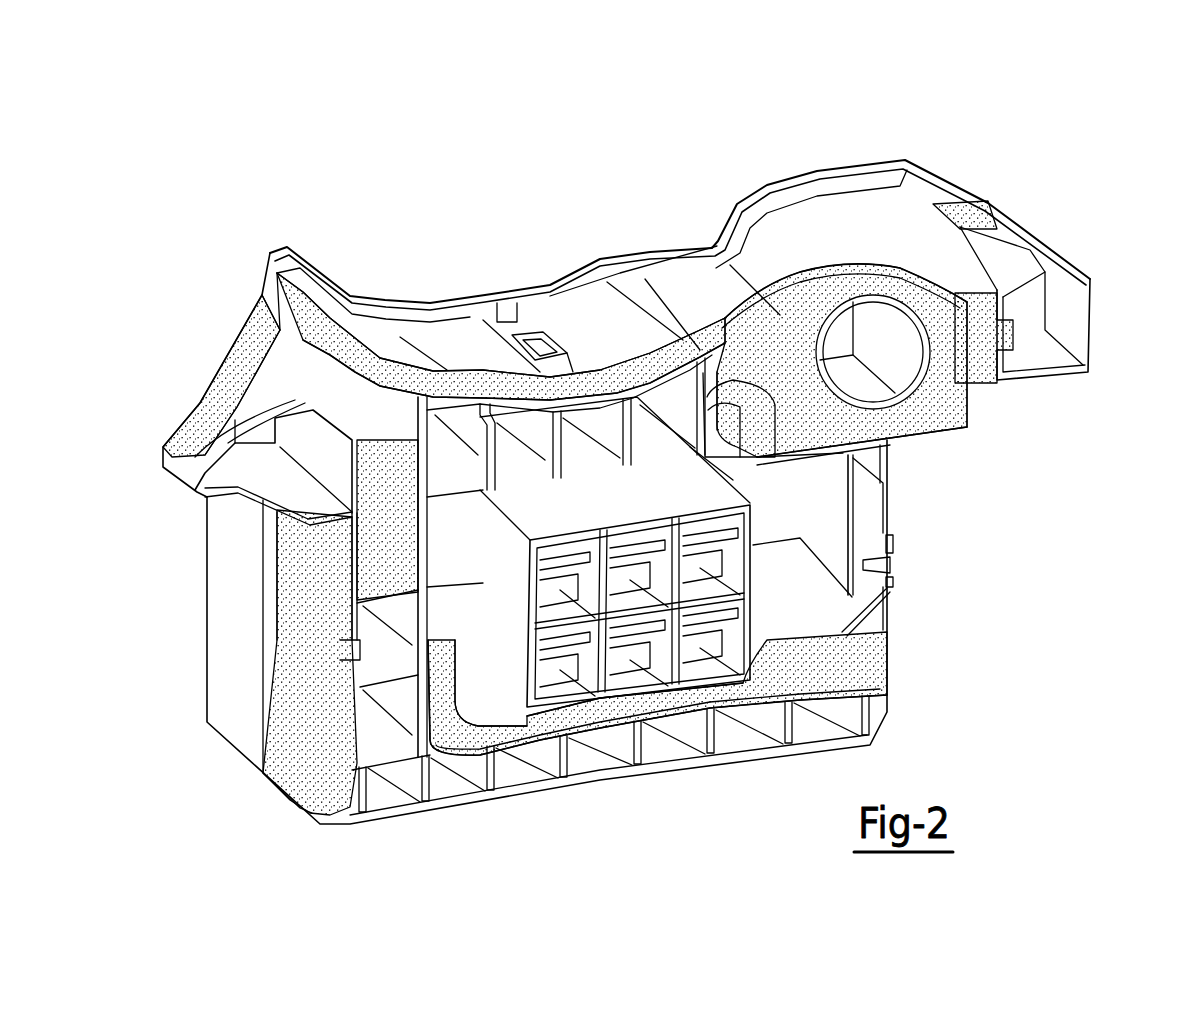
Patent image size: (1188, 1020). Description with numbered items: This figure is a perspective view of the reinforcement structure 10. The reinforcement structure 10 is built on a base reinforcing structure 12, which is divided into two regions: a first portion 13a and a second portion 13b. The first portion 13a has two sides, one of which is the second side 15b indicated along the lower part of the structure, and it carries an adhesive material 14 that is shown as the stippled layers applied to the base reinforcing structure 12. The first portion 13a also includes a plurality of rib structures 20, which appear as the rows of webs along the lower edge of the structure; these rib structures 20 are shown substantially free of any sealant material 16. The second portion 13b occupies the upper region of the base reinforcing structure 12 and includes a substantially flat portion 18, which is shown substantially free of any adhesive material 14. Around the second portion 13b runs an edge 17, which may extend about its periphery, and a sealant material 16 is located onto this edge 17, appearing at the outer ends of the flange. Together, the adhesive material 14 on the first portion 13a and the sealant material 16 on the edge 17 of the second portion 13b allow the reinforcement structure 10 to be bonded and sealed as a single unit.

The reinforcement structure 10 is at (966, 594).
The base reinforcing structure 12 is at (616, 501).
The first portion 13a is at (1132, 480).
The second portion 13b is at (581, 160).
The adhesive material 14 is at (930, 405).
The second side 15b is at (580, 818).
The sealant material 16 is at (280, 372).
The edge 17 is at (737, 317).
The substantially flat portion 18 is at (842, 234).
The rib structures 20 is at (472, 782).